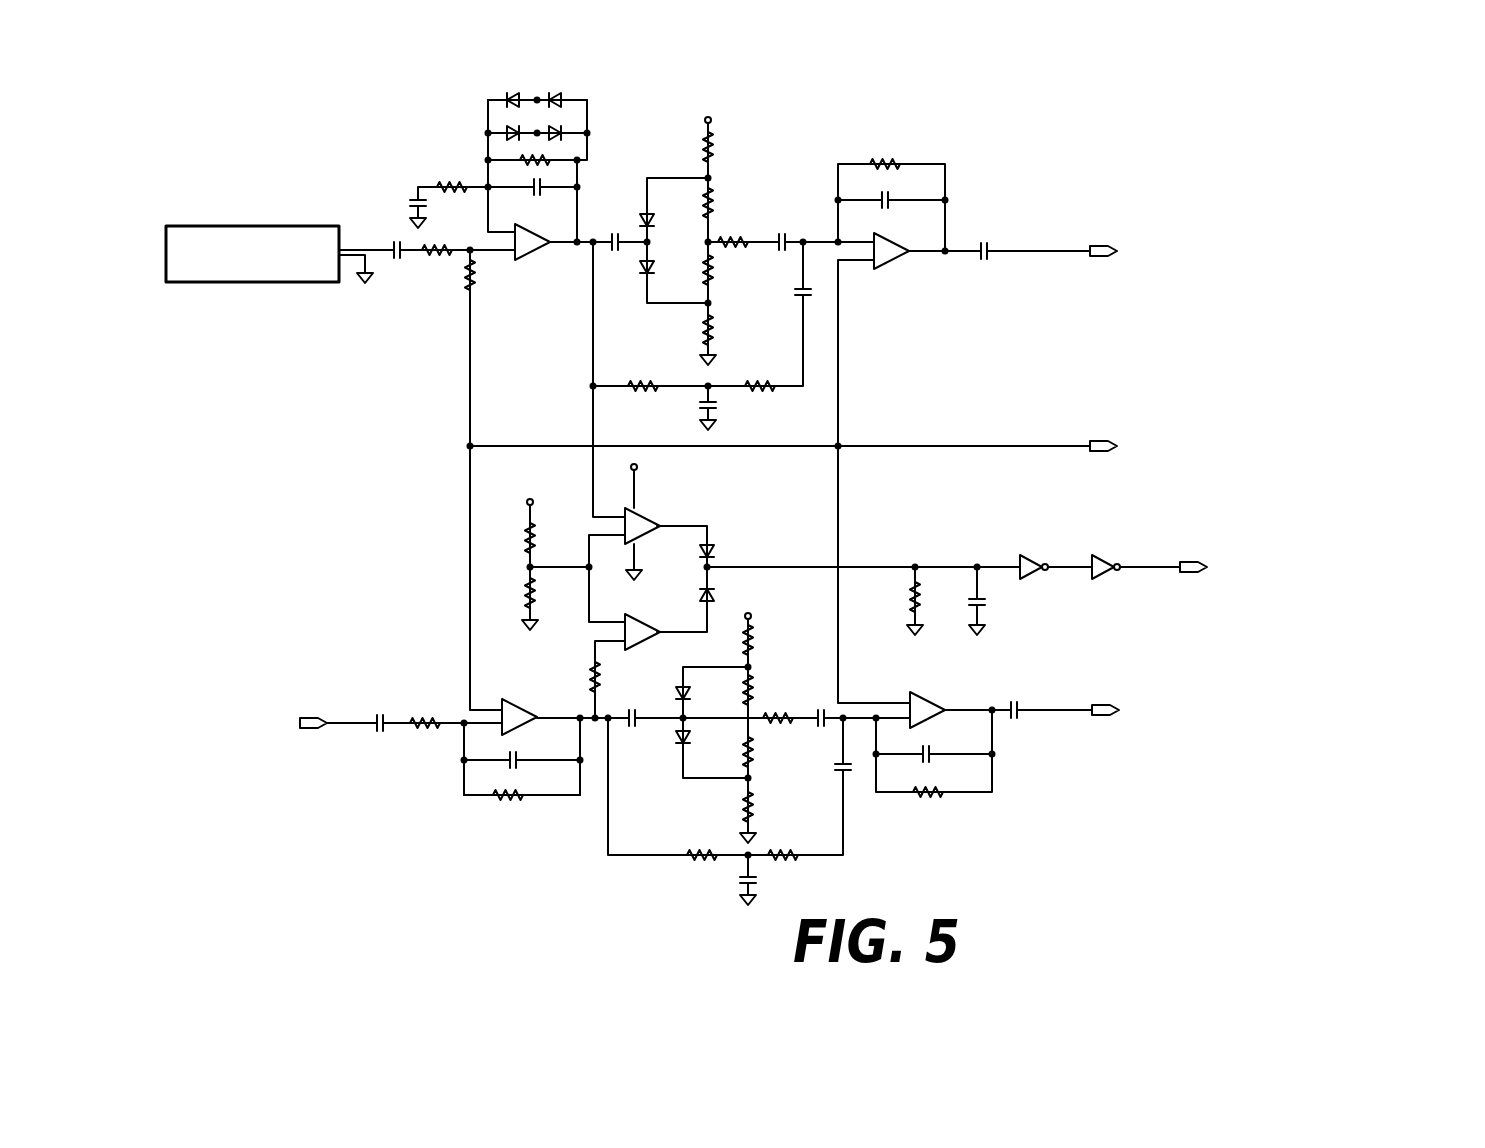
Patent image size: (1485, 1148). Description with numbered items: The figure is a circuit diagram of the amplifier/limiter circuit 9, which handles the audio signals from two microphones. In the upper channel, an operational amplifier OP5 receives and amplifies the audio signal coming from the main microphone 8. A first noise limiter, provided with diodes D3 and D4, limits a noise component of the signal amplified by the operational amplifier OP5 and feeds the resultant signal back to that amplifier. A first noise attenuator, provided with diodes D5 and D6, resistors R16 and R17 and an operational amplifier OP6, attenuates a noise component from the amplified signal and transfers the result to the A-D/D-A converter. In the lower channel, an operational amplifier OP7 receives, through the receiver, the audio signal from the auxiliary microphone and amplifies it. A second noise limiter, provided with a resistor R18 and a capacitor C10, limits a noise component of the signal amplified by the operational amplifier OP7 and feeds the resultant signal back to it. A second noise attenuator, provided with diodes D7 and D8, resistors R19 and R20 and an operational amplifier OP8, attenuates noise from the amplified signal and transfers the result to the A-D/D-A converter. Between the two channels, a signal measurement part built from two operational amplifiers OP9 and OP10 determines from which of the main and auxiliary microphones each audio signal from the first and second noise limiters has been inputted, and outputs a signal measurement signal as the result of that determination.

The main microphone 8 is at (316, 283).
The amplifier/limiter circuit 9 is at (782, 171).
The diode D3 is at (487, 150).
The diode D4 is at (573, 151).
The diode D5 is at (664, 220).
The diode D6 is at (664, 267).
The diode D7 is at (702, 695).
The diode D8 is at (702, 739).
The resistor R16 is at (733, 204).
The resistor R17 is at (733, 273).
The resistor R18 is at (522, 809).
The resistor R19 is at (773, 690).
The resistor R20 is at (773, 752).
The capacitor C10 is at (522, 750).
The operational amplifier OP5 is at (542, 255).
The operational amplifier OP6 is at (904, 264).
The operational amplifier OP7 is at (534, 709).
The operational amplifier OP8 is at (946, 703).
The operational amplifier OP9 is at (658, 517).
The operational amplifier OP10 is at (662, 621).